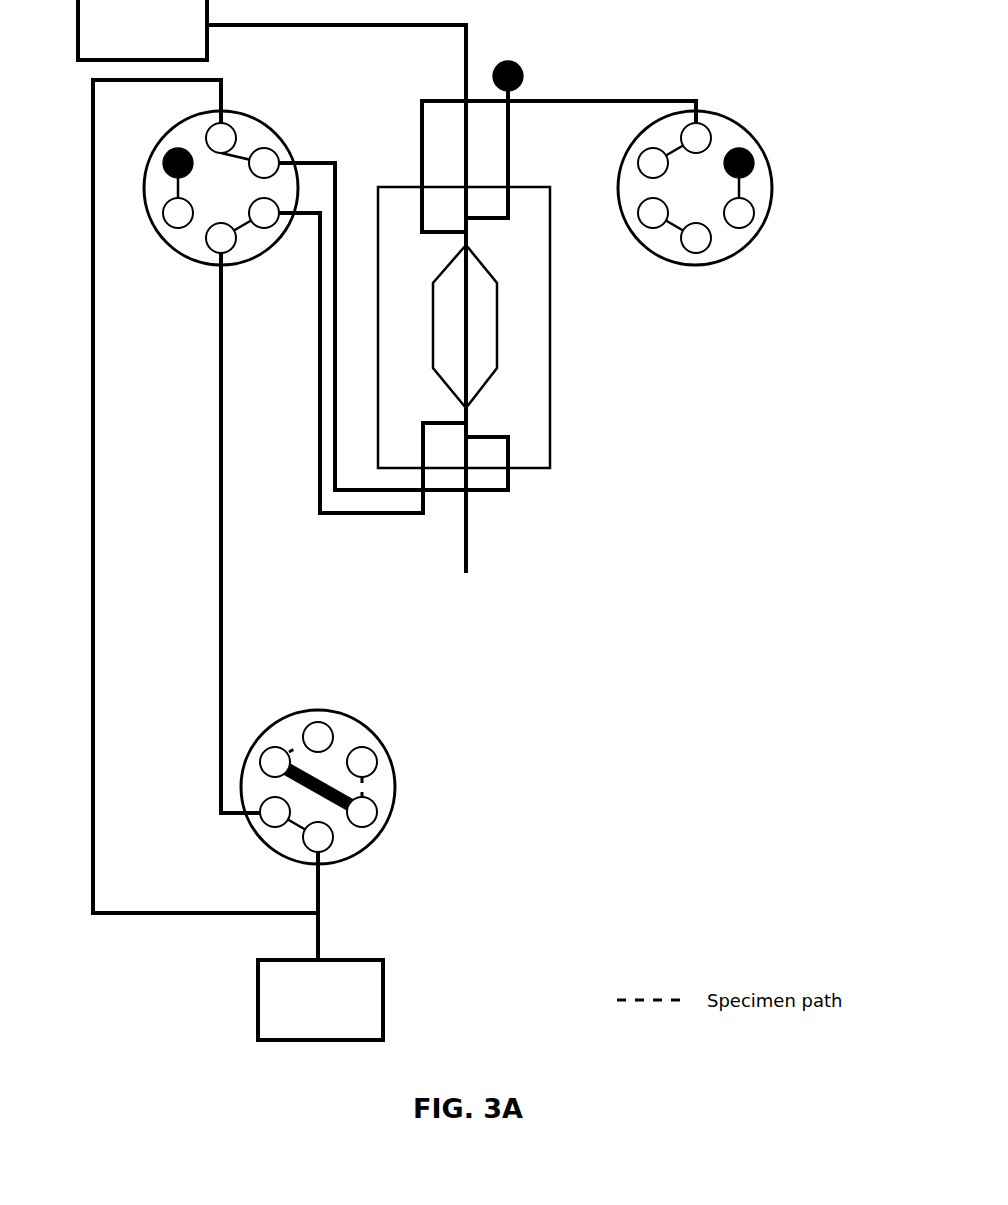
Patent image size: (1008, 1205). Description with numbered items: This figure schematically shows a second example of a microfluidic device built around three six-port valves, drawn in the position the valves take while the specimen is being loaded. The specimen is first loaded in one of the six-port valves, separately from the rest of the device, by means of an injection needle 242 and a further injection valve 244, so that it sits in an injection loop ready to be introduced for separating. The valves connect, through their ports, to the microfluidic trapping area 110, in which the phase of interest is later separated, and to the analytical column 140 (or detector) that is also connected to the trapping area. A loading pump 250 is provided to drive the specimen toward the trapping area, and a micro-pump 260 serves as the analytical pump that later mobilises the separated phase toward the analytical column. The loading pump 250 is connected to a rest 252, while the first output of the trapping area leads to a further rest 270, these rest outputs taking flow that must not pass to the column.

The microfluidic trapping area 110 is at (479, 327).
The analytical column 140 is at (467, 538).
The injection needle 242 is at (375, 745).
The injection valve 244 is at (313, 722).
The loading pump 250 is at (320, 946).
The rest 252 is at (168, 225).
The micro-pump 260 is at (272, 286).
The rest 270 is at (637, 155).